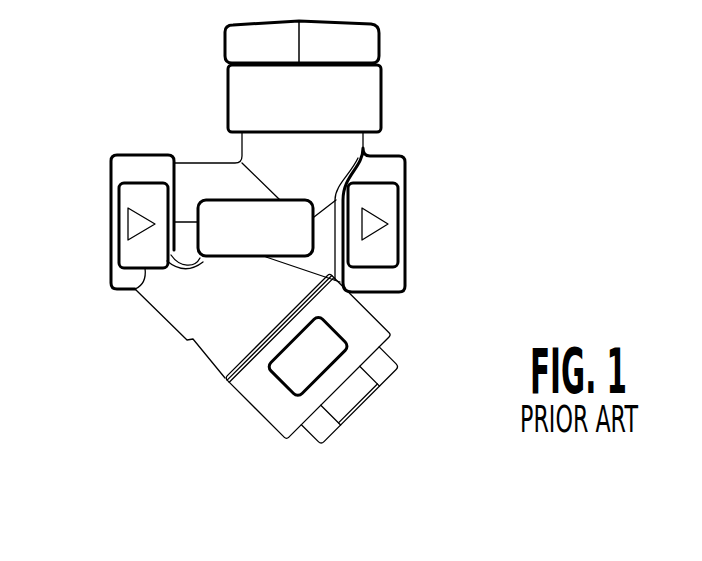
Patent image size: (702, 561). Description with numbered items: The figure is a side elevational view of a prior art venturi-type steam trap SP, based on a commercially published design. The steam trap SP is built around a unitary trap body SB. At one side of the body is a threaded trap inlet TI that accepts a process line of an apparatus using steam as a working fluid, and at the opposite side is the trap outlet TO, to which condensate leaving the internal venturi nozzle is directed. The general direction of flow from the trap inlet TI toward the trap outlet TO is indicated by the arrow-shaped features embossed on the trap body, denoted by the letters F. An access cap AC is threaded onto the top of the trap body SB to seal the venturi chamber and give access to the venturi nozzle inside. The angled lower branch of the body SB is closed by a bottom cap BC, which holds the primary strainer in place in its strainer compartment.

The access cap AC is at (232, 45).
The trap body SB is at (202, 170).
The steam trap SP is at (408, 126).
The trap inlet TI is at (108, 172).
The trap outlet TO is at (405, 182).
The flow direction features F is at (130, 222).
The bottom cap BC is at (383, 372).